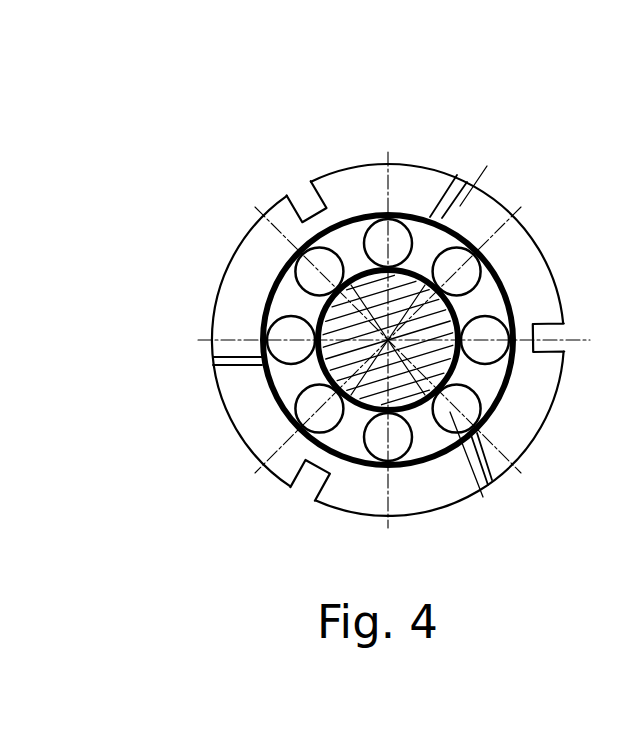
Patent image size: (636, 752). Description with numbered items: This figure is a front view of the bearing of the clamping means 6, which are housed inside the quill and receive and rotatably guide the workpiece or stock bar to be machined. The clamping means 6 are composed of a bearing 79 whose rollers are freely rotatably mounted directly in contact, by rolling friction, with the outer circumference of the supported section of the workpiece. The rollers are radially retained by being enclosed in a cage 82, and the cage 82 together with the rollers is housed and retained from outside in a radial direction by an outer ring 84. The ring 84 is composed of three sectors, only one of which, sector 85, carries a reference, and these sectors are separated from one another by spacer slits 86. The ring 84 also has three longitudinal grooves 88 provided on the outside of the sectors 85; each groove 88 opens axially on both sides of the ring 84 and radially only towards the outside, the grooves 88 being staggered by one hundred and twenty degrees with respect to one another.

The clamping means 6 is at (567, 82).
The bearing 79 is at (505, 173).
The cage 82 is at (487, 375).
The outer ring 84 is at (241, 431).
The sector 85 is at (532, 277).
The spacer slit 86 is at (486, 447).
The longitudinal groove 88 is at (298, 195).